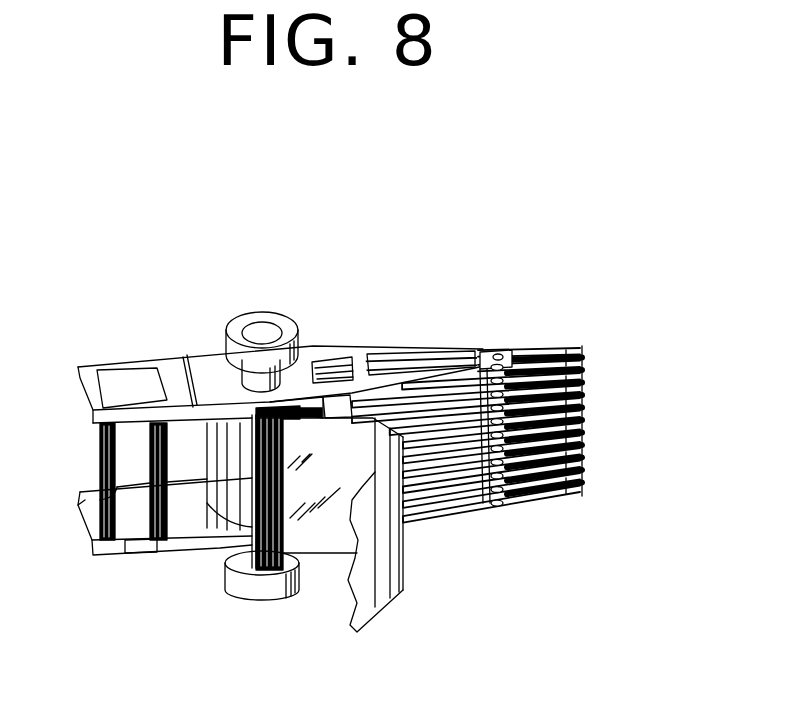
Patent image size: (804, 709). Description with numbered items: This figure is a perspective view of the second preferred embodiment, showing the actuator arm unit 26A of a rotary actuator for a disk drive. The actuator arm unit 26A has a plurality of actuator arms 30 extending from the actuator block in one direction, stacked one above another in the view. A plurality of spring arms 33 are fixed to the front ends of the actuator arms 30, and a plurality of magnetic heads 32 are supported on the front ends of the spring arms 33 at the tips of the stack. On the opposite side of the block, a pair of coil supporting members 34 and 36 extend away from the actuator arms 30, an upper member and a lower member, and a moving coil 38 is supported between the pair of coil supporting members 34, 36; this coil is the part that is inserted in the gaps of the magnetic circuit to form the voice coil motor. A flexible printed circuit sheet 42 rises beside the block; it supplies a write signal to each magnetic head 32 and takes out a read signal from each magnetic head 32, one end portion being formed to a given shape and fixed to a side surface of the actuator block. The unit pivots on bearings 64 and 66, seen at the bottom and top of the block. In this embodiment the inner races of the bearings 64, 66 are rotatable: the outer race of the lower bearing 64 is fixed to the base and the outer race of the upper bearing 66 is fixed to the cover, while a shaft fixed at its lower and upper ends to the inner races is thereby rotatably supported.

The actuator arm unit 26A is at (311, 340).
The actuator arms 30 is at (421, 352).
The magnetic heads 32 is at (572, 348).
The spring arms 33 is at (523, 352).
The coil supporting member 34 is at (178, 360).
The coil supporting member 36 is at (178, 555).
The moving coil 38 is at (97, 465).
The flexible printed circuit sheet 42 is at (402, 570).
The bearing 64 is at (264, 600).
The bearing 66 is at (268, 315).